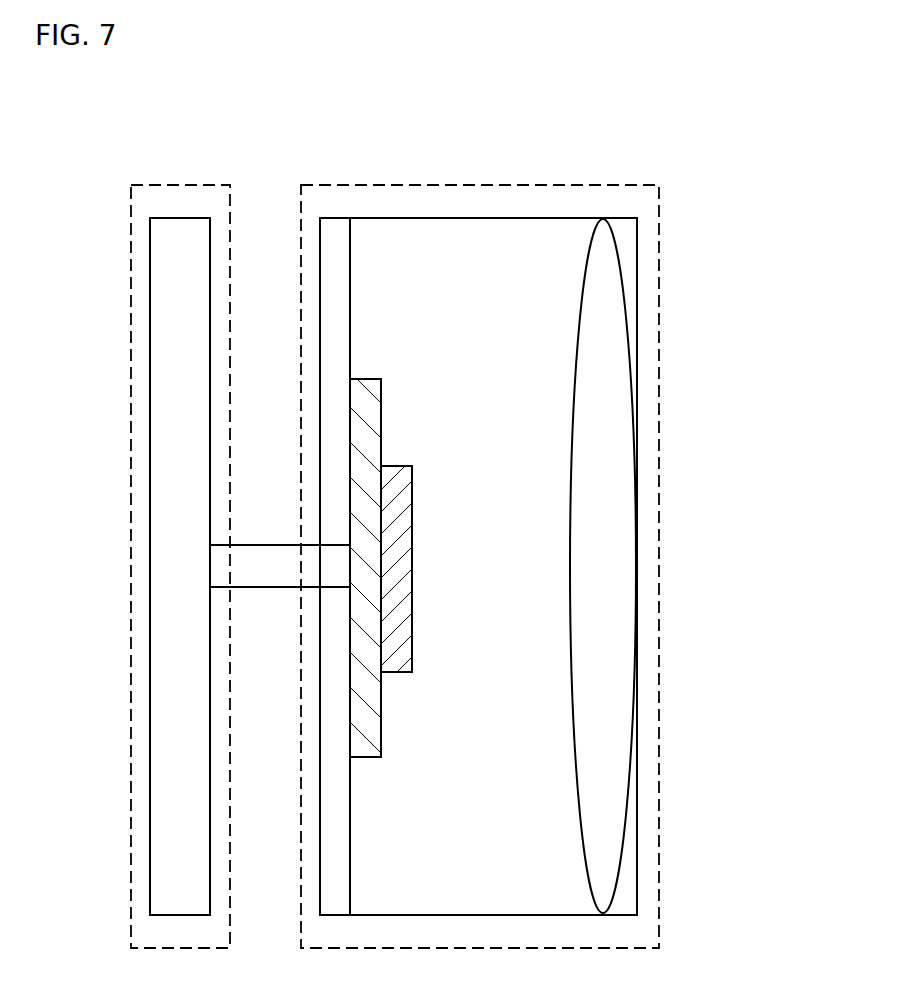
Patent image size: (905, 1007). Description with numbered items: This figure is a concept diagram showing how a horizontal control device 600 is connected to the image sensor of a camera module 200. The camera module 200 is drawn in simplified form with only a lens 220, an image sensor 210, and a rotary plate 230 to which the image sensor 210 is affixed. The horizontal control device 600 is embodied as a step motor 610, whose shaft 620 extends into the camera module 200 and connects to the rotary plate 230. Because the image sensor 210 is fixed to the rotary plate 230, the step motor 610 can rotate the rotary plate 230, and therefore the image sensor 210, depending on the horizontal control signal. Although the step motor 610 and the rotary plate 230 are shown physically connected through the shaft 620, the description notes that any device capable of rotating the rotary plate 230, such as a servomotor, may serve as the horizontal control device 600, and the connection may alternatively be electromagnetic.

The horizontal control device 600 is at (131, 567).
The step motor 610 is at (180, 218).
The shaft 620 is at (263, 545).
The camera module 200 is at (478, 185).
The image sensor 210 is at (397, 466).
The lens 220 is at (636, 566).
The rotary plate 230 is at (367, 379).